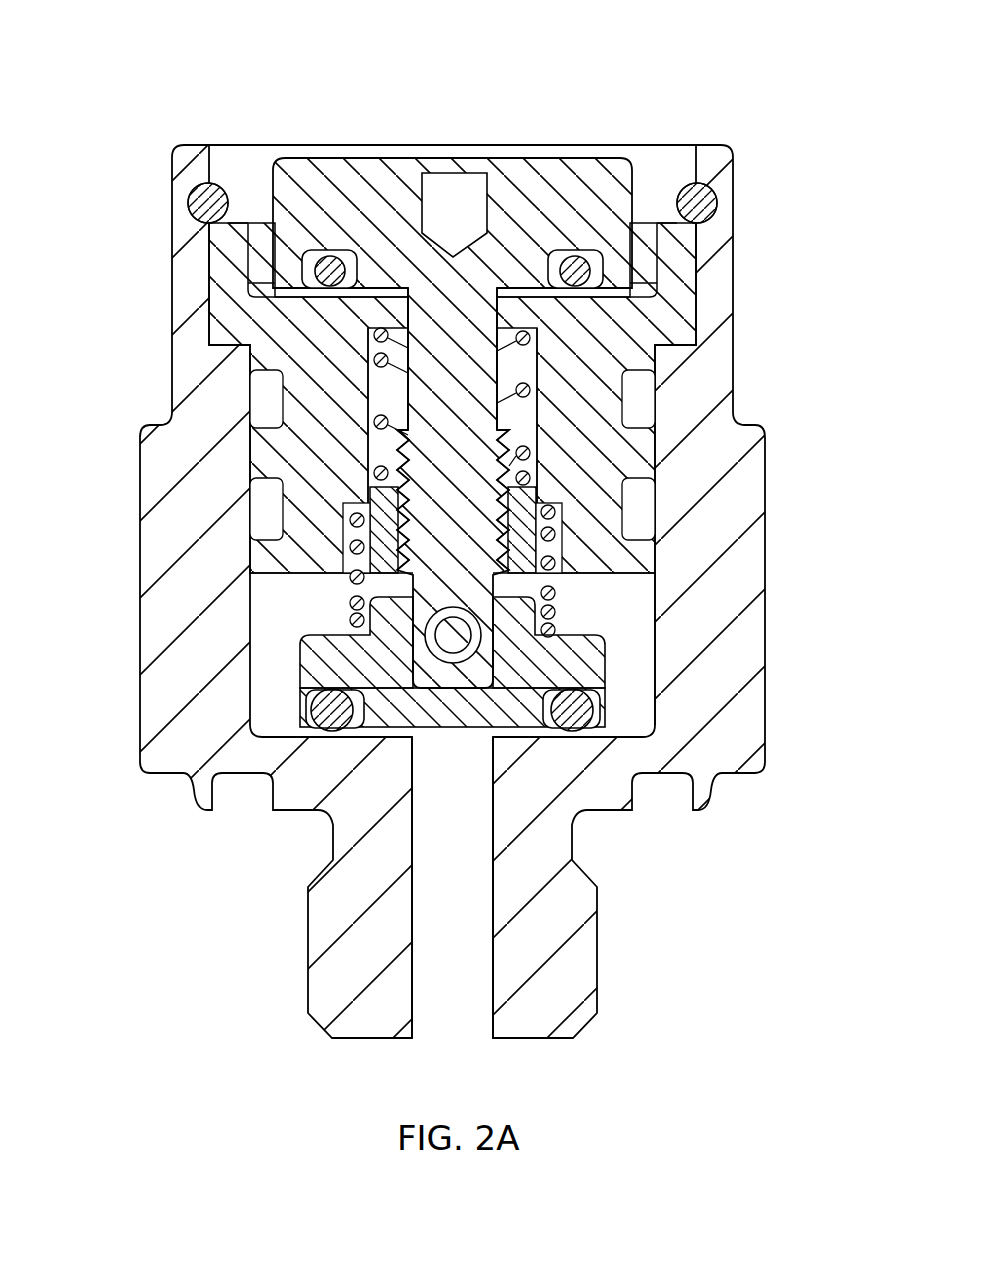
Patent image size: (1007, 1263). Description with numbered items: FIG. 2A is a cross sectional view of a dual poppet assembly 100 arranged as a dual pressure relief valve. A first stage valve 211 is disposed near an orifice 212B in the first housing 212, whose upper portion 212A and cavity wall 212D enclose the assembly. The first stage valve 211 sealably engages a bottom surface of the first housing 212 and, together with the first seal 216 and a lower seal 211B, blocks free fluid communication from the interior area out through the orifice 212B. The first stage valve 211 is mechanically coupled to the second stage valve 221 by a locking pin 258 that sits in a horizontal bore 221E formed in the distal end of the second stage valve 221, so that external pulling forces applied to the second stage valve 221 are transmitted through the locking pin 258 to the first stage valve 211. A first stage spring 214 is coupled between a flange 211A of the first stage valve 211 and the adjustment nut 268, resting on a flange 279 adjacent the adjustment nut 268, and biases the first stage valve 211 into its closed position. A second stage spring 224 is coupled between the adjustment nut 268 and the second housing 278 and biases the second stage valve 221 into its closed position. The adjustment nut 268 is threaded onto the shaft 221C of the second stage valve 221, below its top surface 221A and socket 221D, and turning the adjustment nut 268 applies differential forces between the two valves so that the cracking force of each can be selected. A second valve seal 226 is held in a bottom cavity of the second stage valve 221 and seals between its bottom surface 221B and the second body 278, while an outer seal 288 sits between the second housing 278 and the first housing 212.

The valve assembly 100 is at (133, 70).
The first stage valve 211 is at (600, 680).
The flange 211A is at (323, 637).
The lower body seal 211B is at (318, 725).
The first housing 212 is at (710, 387).
The housing top 212A is at (640, 166).
The orifice 212B is at (432, 1020).
The housing cavity wall 212D is at (623, 655).
The first stage spring 214 is at (547, 593).
The first seal 216 is at (578, 715).
The second stage valve 221 is at (331, 178).
The piston top surface 221A is at (541, 160).
The bottom surface 221B is at (372, 318).
The shaft 221C is at (470, 312).
The piston socket 221D is at (453, 190).
The bore 221E is at (445, 595).
The second stage spring 224 is at (375, 423).
The second valve seal 226 is at (573, 273).
The locking pin 258 is at (453, 665).
The adjustment nut 268 is at (527, 495).
The second housing 278 is at (682, 303).
The flange 279 is at (380, 332).
The housing seal 288 is at (703, 203).